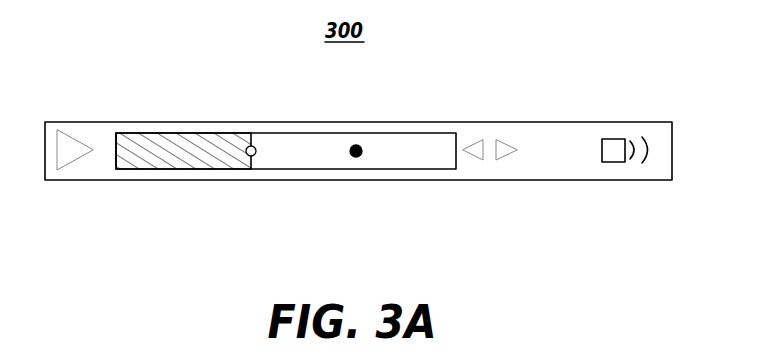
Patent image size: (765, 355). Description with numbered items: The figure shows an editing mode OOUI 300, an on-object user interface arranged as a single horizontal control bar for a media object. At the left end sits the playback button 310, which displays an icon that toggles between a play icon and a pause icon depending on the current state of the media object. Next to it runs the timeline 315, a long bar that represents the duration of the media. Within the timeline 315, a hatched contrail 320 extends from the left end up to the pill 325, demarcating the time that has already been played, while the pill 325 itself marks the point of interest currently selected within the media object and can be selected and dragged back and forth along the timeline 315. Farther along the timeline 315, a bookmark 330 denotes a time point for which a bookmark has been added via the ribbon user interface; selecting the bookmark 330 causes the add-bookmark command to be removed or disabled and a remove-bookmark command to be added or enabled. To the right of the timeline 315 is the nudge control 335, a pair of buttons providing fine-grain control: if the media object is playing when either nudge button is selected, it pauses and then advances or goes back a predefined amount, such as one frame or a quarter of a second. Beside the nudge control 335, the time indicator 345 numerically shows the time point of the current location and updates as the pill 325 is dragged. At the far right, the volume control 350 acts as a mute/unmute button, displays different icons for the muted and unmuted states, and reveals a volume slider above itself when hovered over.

The editing mode OOUI 300 is at (358, 151).
The playback button 310 is at (70, 142).
The timeline 315 is at (412, 133).
The contrail 320 is at (190, 138).
The pill 325 is at (252, 156).
The bookmark 330 is at (357, 157).
The nudge control 335 is at (497, 142).
The time indicator 345 is at (558, 138).
The volume control 350 is at (613, 162).